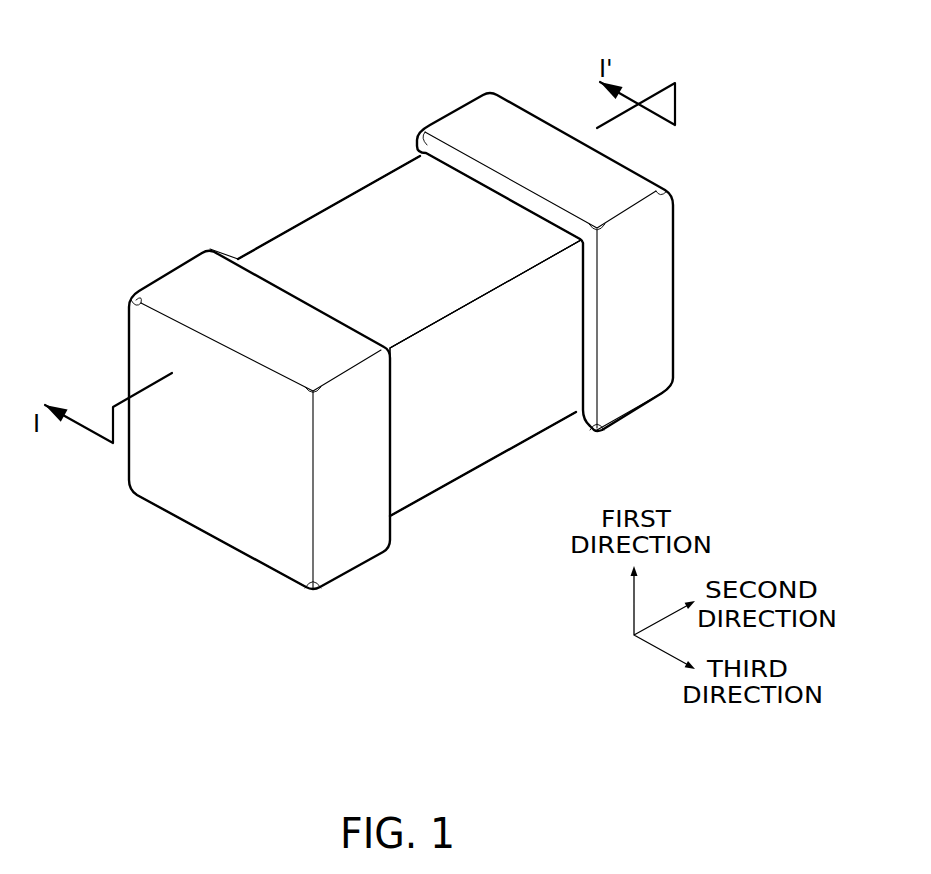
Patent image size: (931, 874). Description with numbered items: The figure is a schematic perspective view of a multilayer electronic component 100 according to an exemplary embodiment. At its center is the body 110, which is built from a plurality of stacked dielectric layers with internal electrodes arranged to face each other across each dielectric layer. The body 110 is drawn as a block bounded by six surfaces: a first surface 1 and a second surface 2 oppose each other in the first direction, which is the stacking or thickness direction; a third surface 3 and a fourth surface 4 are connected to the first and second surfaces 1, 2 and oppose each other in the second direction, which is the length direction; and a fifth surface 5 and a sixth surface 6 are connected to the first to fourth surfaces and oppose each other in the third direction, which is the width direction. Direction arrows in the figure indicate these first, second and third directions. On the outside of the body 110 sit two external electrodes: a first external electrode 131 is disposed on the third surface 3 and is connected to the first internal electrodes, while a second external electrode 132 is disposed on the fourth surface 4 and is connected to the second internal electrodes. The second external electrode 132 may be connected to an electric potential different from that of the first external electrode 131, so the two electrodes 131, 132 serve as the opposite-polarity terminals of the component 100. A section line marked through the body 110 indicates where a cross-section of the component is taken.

The multilayer electronic component 100 is at (427, 305).
The body 110 is at (410, 326).
The first external electrode 131 is at (253, 393).
The second external electrode 132 is at (577, 226).
The first surface 1 is at (463, 465).
The second surface 2 is at (375, 192).
The third surface 3 is at (226, 472).
The fourth surface 4 is at (655, 300).
The fifth surface 5 is at (545, 405).
The sixth surface 6 is at (275, 228).